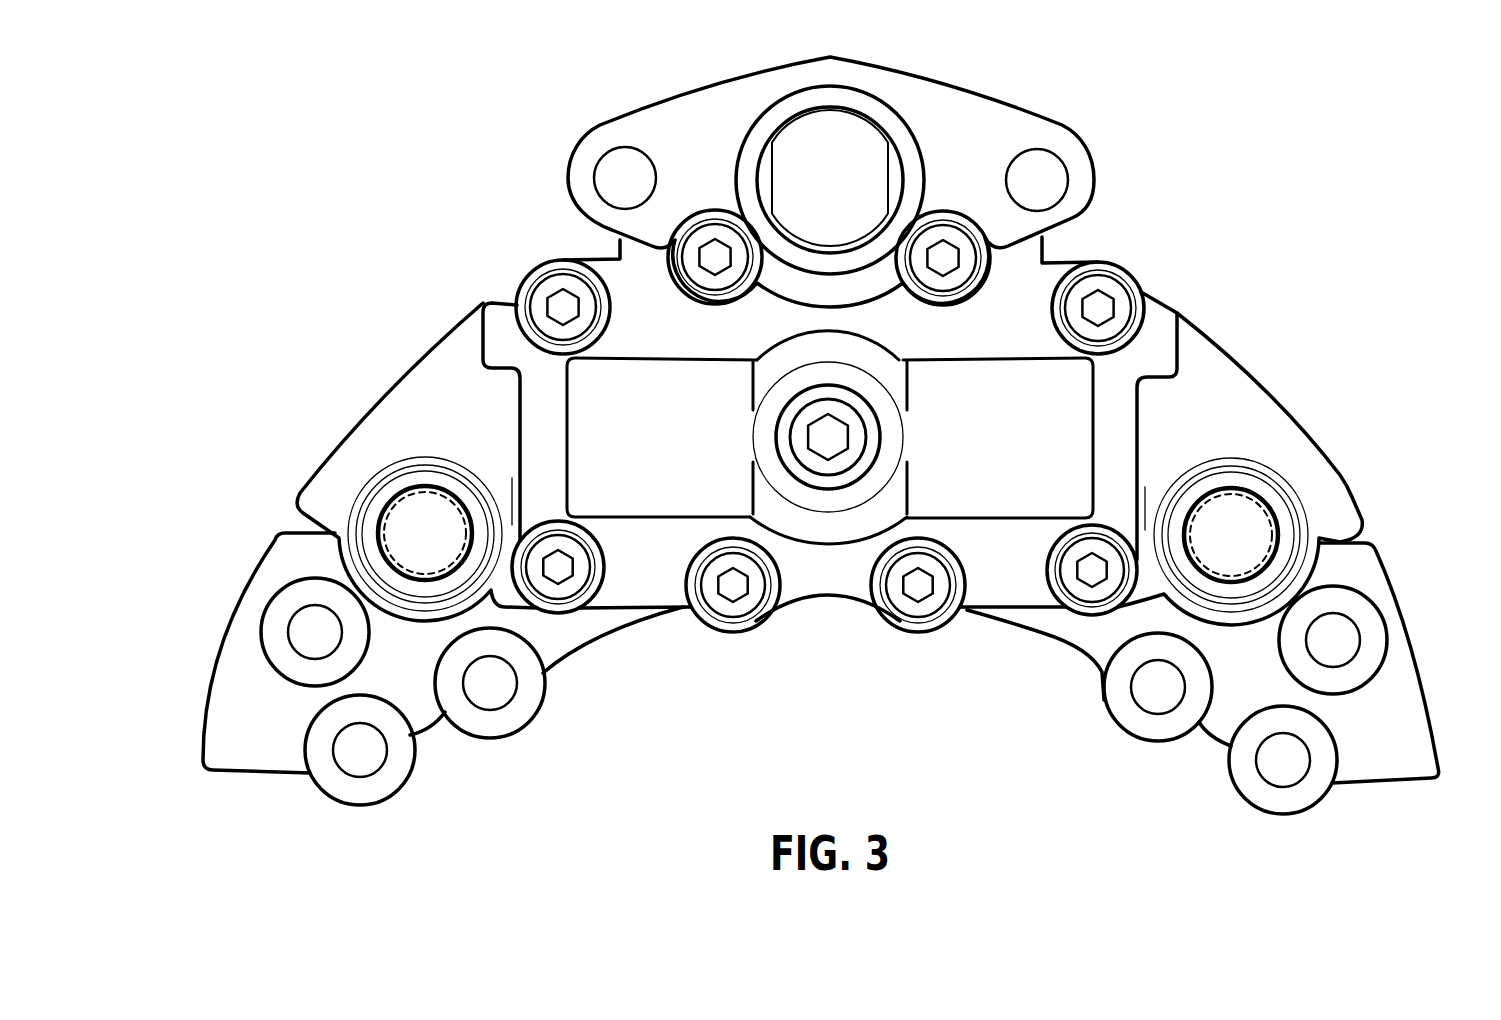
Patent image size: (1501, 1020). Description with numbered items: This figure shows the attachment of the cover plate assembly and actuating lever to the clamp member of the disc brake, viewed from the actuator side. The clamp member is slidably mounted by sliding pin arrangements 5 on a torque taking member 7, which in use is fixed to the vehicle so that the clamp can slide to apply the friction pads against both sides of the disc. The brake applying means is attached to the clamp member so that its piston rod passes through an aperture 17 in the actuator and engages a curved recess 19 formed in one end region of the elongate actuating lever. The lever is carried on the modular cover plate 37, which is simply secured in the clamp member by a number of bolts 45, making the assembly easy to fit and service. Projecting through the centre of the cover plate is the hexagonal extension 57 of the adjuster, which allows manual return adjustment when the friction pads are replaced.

The sliding pin arrangements 5 is at (410, 535).
The torque taking member 7 is at (222, 716).
The aperture 17 is at (822, 112).
The curved recess 19 is at (843, 200).
The cover plate 37 is at (577, 450).
The bolts 45 is at (541, 297).
The extension of the adjuster 57 is at (832, 433).